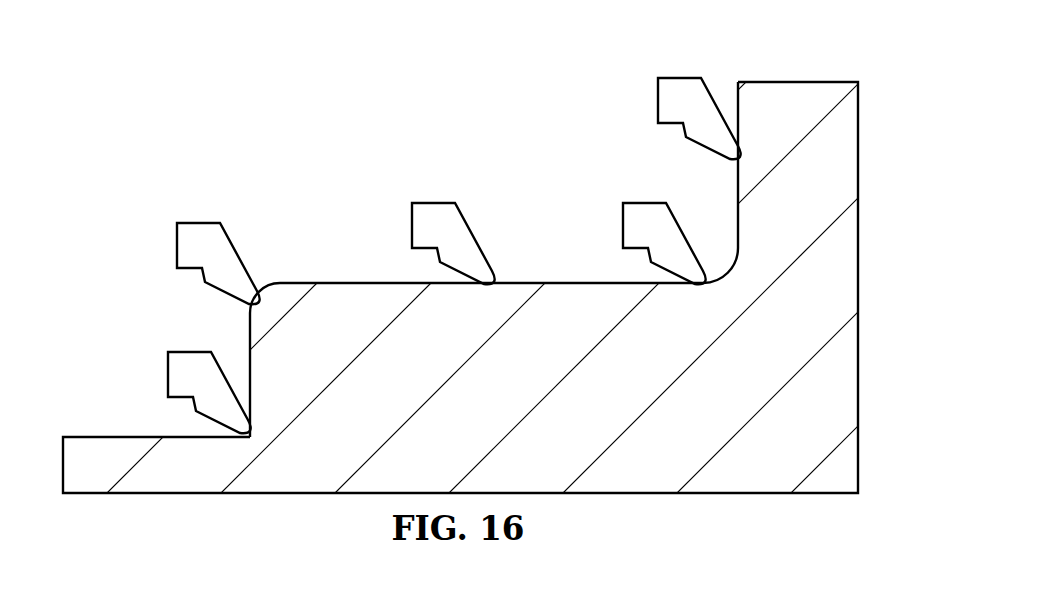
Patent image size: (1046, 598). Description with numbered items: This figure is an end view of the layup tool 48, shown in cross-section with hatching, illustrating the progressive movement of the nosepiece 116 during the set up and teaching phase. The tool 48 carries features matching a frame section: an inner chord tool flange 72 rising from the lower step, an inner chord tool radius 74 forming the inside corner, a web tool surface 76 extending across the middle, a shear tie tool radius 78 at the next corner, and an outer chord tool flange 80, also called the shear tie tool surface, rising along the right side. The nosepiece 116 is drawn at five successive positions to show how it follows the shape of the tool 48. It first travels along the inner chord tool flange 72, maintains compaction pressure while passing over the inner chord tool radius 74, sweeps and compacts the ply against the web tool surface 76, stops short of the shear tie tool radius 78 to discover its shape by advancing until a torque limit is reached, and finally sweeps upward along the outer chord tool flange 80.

The tool 48 is at (799, 78).
The inner chord tool flange 72 is at (248, 338).
The inner chord tool radius 74 is at (262, 294).
The web tool surface 76 is at (513, 282).
The shear tie tool radius 78 is at (733, 267).
The outer chord tool flange 80 is at (738, 187).
The nosepiece 116 is at (176, 245).